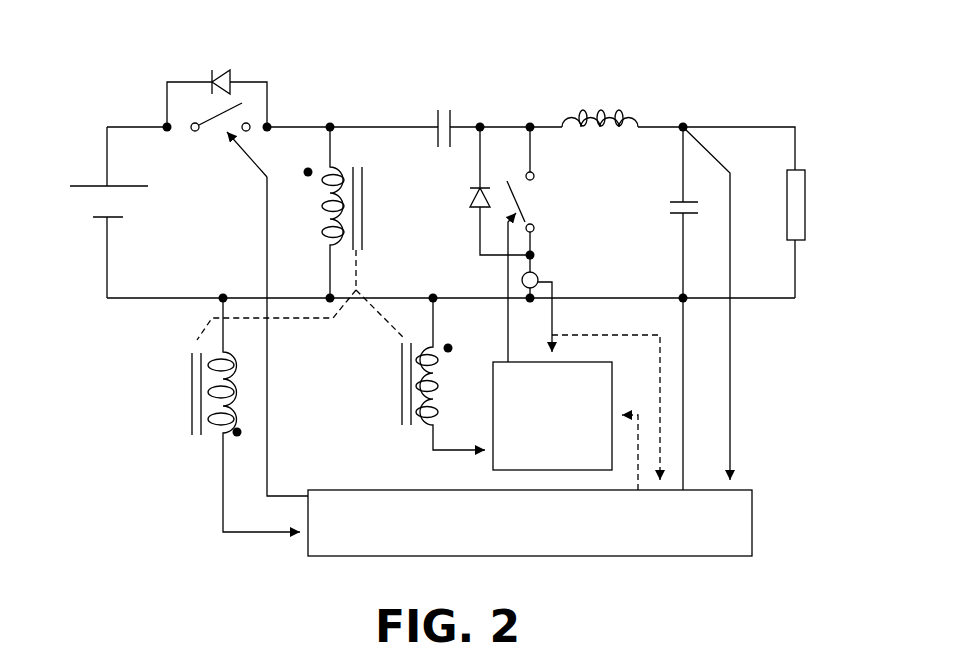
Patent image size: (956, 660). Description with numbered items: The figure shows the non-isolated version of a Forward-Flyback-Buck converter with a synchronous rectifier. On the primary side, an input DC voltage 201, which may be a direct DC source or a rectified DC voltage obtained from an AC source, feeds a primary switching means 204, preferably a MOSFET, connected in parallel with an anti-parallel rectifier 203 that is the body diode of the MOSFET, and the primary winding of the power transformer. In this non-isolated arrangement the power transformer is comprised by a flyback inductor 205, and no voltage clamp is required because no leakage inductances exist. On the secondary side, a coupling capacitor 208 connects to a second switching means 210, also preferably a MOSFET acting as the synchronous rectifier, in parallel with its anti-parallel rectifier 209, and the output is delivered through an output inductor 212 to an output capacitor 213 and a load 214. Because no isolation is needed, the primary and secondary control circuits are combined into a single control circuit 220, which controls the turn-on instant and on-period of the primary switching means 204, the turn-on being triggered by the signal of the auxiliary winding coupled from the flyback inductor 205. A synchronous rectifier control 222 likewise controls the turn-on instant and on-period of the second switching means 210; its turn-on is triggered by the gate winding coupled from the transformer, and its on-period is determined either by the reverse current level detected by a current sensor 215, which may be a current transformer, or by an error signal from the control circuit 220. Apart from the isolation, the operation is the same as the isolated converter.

The input DC voltage 201 is at (102, 182).
The anti-parallel rectifier 203 is at (212, 75).
The primary switching means 204 is at (214, 128).
The flyback inductor 205 is at (363, 177).
The coupling capacitor 208 is at (443, 112).
The anti-parallel rectifier 209 is at (473, 210).
The second switching means 210 is at (528, 203).
The output inductor 212 is at (640, 104).
The output capacitor 213 is at (675, 218).
The load 214 is at (803, 240).
The current sensor 215 is at (521, 280).
The control circuit 220 is at (343, 488).
The synchronous rectifier control 222 is at (612, 384).